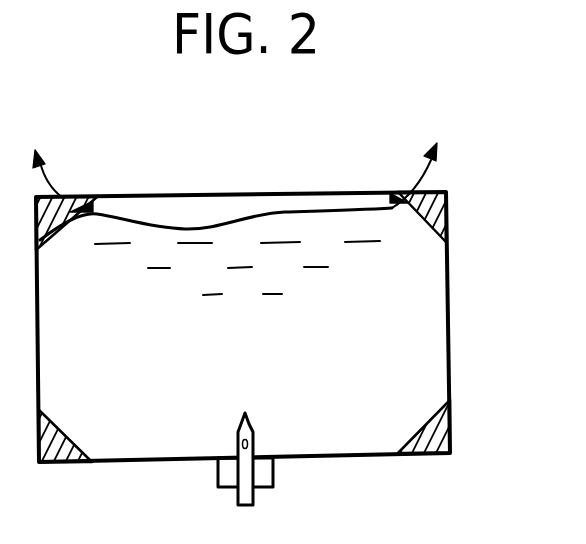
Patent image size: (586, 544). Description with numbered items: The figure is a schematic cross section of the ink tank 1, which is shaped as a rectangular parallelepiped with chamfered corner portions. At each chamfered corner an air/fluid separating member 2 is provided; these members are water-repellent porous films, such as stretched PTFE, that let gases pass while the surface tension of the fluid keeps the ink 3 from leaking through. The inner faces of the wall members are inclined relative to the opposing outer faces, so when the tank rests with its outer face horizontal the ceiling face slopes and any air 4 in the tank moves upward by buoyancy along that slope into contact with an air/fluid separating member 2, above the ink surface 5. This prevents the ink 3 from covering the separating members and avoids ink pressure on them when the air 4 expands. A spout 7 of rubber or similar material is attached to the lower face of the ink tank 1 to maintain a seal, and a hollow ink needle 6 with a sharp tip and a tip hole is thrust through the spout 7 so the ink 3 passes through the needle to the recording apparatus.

The ink tank 1 is at (452, 310).
The air/fluid separating member 2 is at (447, 207).
The ink 3 is at (278, 230).
The air 4 is at (119, 211).
The ink surface 5 is at (213, 222).
The ink needle 6 is at (239, 496).
The spout 7 is at (275, 473).